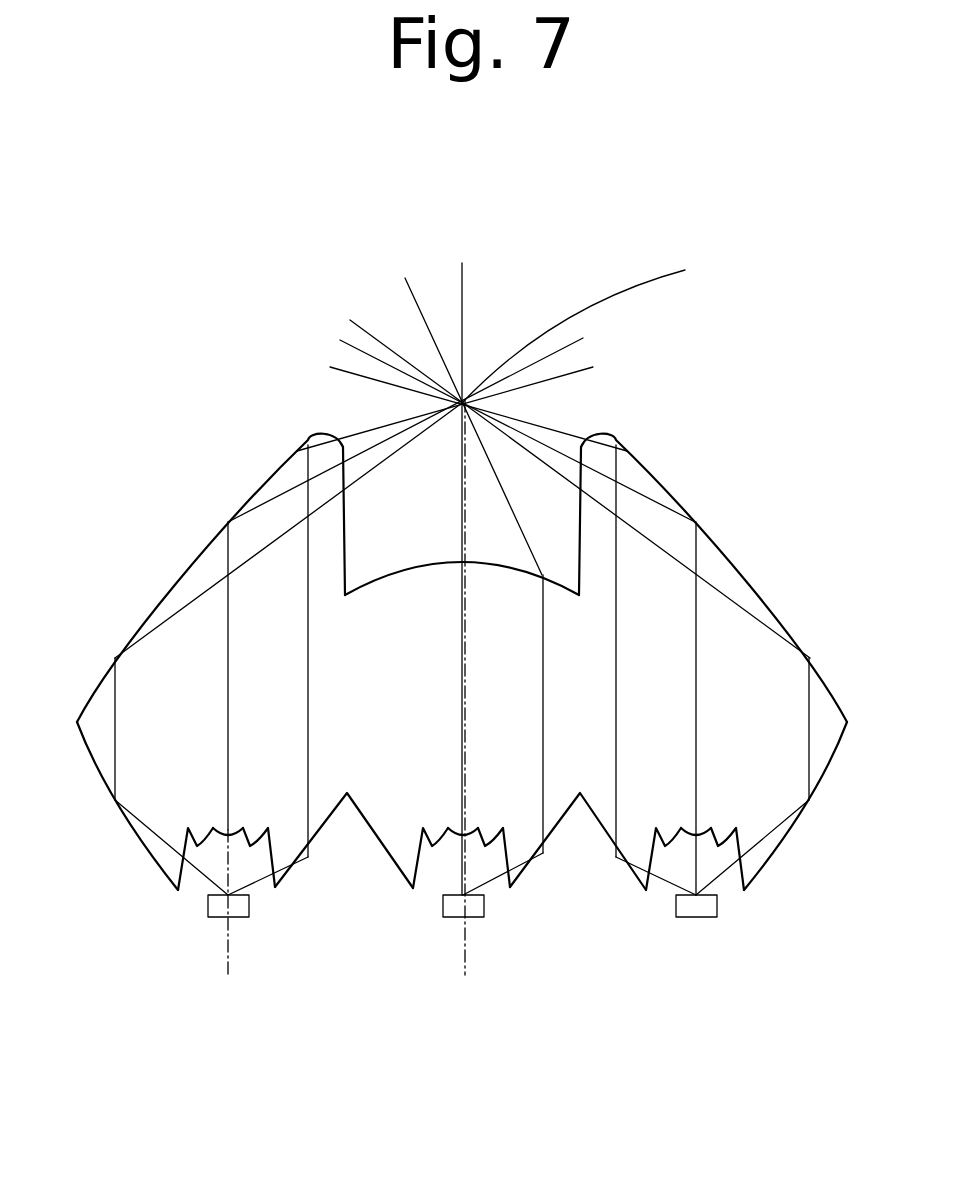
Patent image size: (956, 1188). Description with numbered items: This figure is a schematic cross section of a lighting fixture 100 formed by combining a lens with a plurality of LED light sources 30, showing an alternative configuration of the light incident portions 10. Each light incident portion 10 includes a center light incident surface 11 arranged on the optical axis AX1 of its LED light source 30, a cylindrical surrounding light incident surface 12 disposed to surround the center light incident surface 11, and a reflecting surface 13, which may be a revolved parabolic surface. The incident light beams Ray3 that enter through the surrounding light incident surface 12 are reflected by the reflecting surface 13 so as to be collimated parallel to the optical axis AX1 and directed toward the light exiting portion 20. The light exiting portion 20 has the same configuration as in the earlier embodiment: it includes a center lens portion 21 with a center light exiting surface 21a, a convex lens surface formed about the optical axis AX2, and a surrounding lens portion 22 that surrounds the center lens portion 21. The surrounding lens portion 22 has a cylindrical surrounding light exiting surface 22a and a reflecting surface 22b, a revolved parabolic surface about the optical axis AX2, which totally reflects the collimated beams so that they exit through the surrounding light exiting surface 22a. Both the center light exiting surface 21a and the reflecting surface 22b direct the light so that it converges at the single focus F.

The lighting device 100 is at (468, 205).
The light incident portion 10 is at (186, 898).
The center light incident surface 11 is at (236, 830).
The cylindrical surrounding light incident surface 12 is at (198, 843).
The reflecting surface 13 is at (160, 848).
The light exiting portion 20 is at (803, 548).
The center lens portion 21 is at (433, 557).
The center light exiting surface 21a is at (382, 575).
The surrounding lens portion 22 is at (680, 488).
The cylindrical surrounding light exiting surface 22a is at (345, 505).
The reflecting surface 22b is at (163, 600).
The LED light source 30 is at (238, 918).
The single focus F is at (477, 402).
The optical axis of LED light source AX1 is at (230, 919).
The optical axis AX2 is at (465, 704).
The incident light beams Ray3 is at (308, 680).